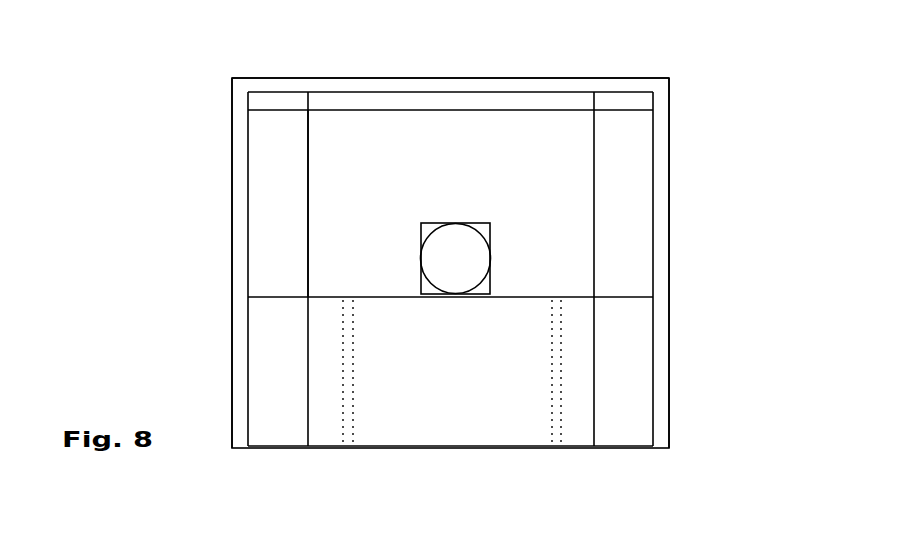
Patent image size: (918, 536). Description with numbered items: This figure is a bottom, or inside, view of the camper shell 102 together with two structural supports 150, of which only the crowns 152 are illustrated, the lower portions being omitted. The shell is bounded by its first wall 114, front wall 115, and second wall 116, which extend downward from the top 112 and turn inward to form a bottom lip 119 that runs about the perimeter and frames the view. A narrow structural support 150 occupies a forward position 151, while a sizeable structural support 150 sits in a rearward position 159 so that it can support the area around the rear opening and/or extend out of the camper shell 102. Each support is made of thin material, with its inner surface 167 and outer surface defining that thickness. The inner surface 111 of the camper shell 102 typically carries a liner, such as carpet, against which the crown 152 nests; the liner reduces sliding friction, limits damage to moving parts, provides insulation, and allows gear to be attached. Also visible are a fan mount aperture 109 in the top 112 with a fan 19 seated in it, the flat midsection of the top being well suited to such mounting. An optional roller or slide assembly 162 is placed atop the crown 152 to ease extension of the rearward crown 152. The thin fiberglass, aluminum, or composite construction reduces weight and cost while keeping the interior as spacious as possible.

The camper shell 102 is at (158, 106).
The second wall 116 is at (232, 166).
The front wall 115 is at (585, 78).
The first wall 114 is at (669, 192).
The bottom lip 119 is at (660, 226).
The structural support 150 is at (524, 257).
The forward position 151 is at (640, 100).
The rearward position 159 is at (640, 370).
The inner surface 167 is at (572, 101).
The crown 152 is at (443, 97).
The inner surface 111 is at (356, 241).
The top 112 is at (462, 150).
The fan mount aperture 109 is at (421, 233).
The fan 19 is at (438, 270).
The roller or slide assembly 162 is at (343, 373).